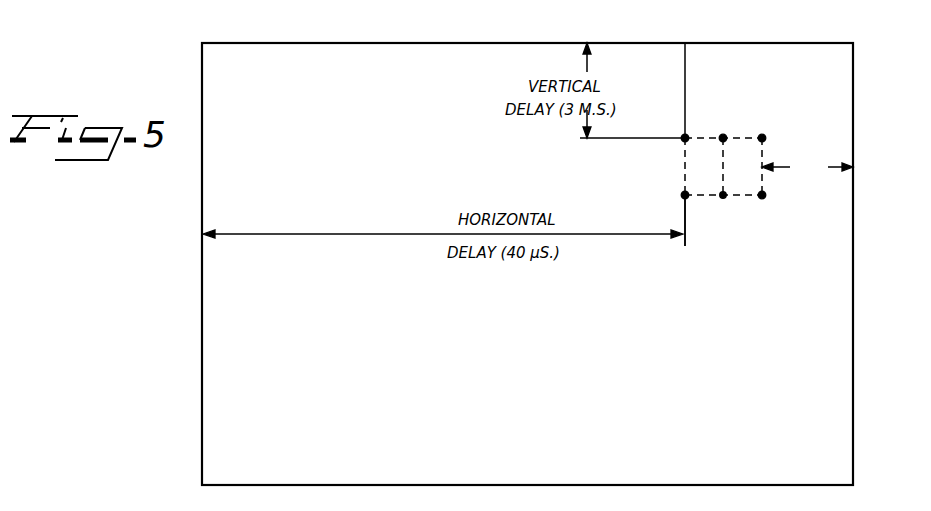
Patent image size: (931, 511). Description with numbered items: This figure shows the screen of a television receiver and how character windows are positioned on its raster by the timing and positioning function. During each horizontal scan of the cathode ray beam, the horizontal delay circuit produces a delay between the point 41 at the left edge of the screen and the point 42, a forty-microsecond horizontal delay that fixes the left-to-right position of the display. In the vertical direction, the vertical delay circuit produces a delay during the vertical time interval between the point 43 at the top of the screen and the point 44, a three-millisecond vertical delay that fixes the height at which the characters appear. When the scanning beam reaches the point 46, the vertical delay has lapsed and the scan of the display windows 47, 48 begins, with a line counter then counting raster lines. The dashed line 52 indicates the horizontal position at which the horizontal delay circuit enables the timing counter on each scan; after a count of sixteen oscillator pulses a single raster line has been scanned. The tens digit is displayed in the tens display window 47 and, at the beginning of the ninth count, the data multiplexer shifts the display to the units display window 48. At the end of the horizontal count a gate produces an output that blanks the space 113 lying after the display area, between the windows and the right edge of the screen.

The point 41 is at (200, 235).
The point 42 is at (687, 237).
The point 43 is at (589, 44).
The point 44 is at (581, 139).
The point 46 is at (688, 136).
The tens display window 47 is at (709, 193).
The units display window 48 is at (753, 191).
The dashed line 52 is at (681, 159).
The space 113 is at (807, 168).